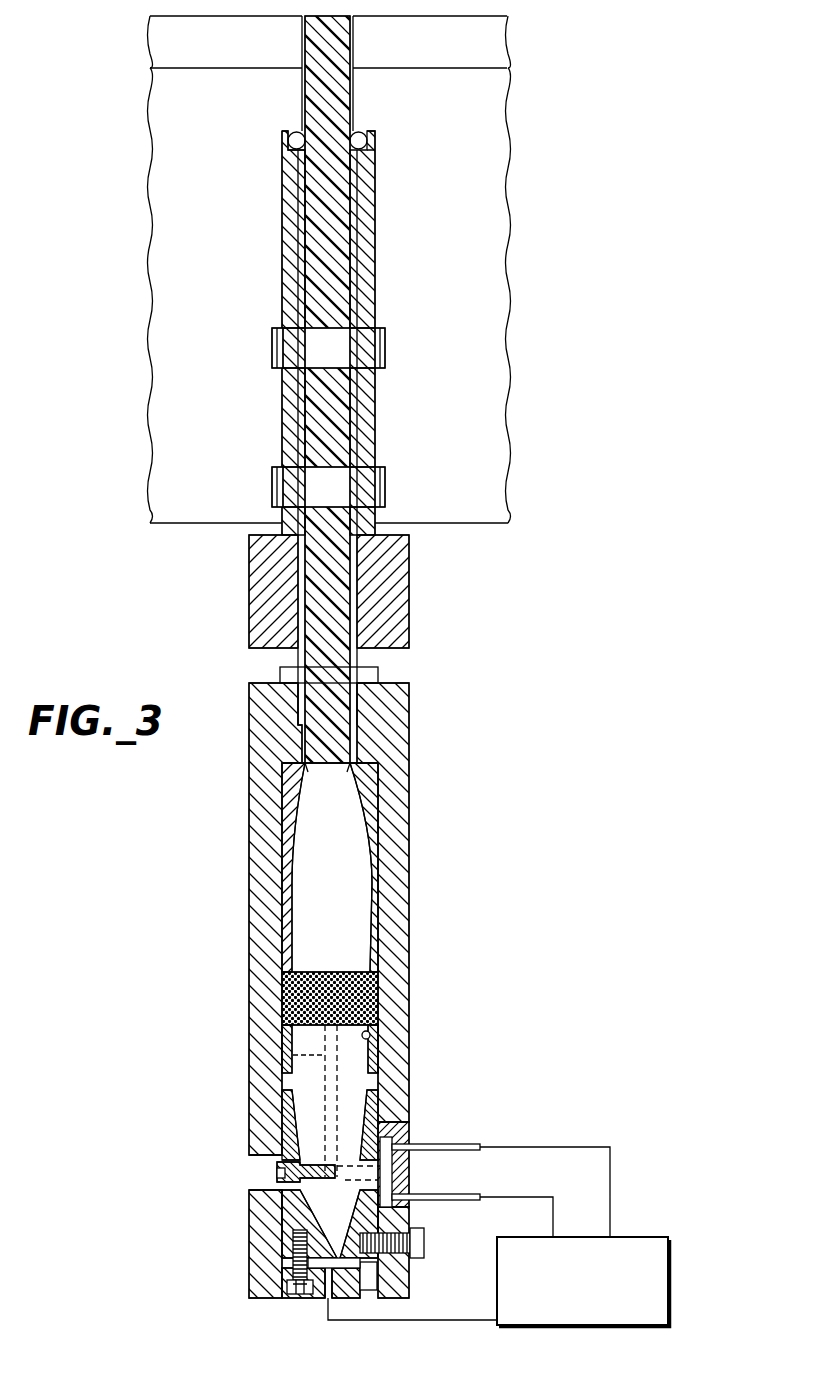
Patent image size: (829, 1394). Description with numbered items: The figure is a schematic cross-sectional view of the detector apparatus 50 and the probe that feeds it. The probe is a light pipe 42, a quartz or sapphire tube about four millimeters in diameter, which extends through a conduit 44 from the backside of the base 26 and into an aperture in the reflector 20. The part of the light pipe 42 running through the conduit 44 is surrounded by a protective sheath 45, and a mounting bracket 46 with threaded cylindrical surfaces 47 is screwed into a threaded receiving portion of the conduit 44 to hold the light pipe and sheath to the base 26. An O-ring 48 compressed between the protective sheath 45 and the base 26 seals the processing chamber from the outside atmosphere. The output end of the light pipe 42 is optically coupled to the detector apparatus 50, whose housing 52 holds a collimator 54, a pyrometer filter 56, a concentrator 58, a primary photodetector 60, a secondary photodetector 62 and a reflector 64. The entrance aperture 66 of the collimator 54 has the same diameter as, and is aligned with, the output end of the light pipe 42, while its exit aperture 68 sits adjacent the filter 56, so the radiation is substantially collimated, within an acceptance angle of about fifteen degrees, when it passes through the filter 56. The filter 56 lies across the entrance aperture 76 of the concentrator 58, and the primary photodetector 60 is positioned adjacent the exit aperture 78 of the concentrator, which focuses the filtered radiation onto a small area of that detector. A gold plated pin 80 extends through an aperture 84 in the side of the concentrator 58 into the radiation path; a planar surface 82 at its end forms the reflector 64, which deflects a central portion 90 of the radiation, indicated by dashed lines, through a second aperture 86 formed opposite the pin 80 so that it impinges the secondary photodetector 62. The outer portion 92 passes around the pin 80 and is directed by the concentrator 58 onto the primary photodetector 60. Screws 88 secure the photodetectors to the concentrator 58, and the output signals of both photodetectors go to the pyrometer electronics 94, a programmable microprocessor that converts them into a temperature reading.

The reflector 20 is at (493, 43).
The base 26 is at (506, 385).
The light pipe 42 is at (336, 203).
The conduit 44 is at (302, 113).
The O-ring 48 is at (359, 132).
The protective sheath 45 is at (376, 278).
The threaded cylindrical surfaces 47 is at (388, 350).
The mounting bracket 46 is at (411, 600).
The housing 52 is at (411, 715).
The detector apparatus 50 is at (516, 732).
The collimator 54 is at (376, 822).
The entrance aperture 66 is at (348, 778).
The pyrometer filter 56 is at (330, 970).
The exit aperture 68 is at (292, 955).
The entrance aperture 76 is at (372, 1038).
The central portion 90 is at (288, 1040).
The outer portion 92 is at (310, 1083).
The planar surface 82 is at (340, 1165).
The concentrator 58 is at (288, 1133).
The gold plated pin 80 is at (302, 1156).
The reflector 64 is at (253, 1163).
The aperture 84 is at (278, 1184).
The exit aperture 78 is at (288, 1218).
The second aperture 86 is at (412, 1216).
The screws 88 is at (423, 1250).
The primary photodetector 60 is at (327, 1316).
The secondary photodetector 62 is at (397, 1121).
The pyrometer electronics 94 is at (668, 1295).